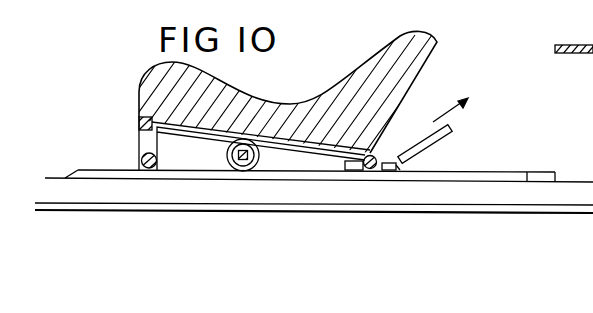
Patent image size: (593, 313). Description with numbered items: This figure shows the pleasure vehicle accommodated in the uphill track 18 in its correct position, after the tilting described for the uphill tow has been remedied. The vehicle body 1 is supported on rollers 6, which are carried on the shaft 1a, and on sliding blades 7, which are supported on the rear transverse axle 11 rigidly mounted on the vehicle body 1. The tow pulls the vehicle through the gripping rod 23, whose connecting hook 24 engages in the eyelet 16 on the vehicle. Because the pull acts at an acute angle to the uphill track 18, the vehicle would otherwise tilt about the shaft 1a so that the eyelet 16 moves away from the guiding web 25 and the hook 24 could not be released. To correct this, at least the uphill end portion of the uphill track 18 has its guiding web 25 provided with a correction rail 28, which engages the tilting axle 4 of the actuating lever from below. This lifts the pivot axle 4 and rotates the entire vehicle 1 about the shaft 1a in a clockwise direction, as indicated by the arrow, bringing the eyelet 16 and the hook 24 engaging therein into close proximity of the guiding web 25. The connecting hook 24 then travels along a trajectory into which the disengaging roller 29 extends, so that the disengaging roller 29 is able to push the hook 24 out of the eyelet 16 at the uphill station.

The vehicle body 1 is at (330, 88).
The shaft 1a is at (243, 160).
The axle 4 is at (143, 155).
The rollers 6 is at (222, 150).
The sliding blades 7 is at (357, 167).
The axle 11 is at (373, 168).
The eyelet 16 is at (383, 170).
The uphill track 18 is at (78, 196).
The gripping rod 23 is at (452, 133).
The connecting hook 24 is at (398, 168).
The guiding web 25 is at (290, 188).
The correction rail 28 is at (493, 180).
The disengaging roller 29 is at (546, 184).